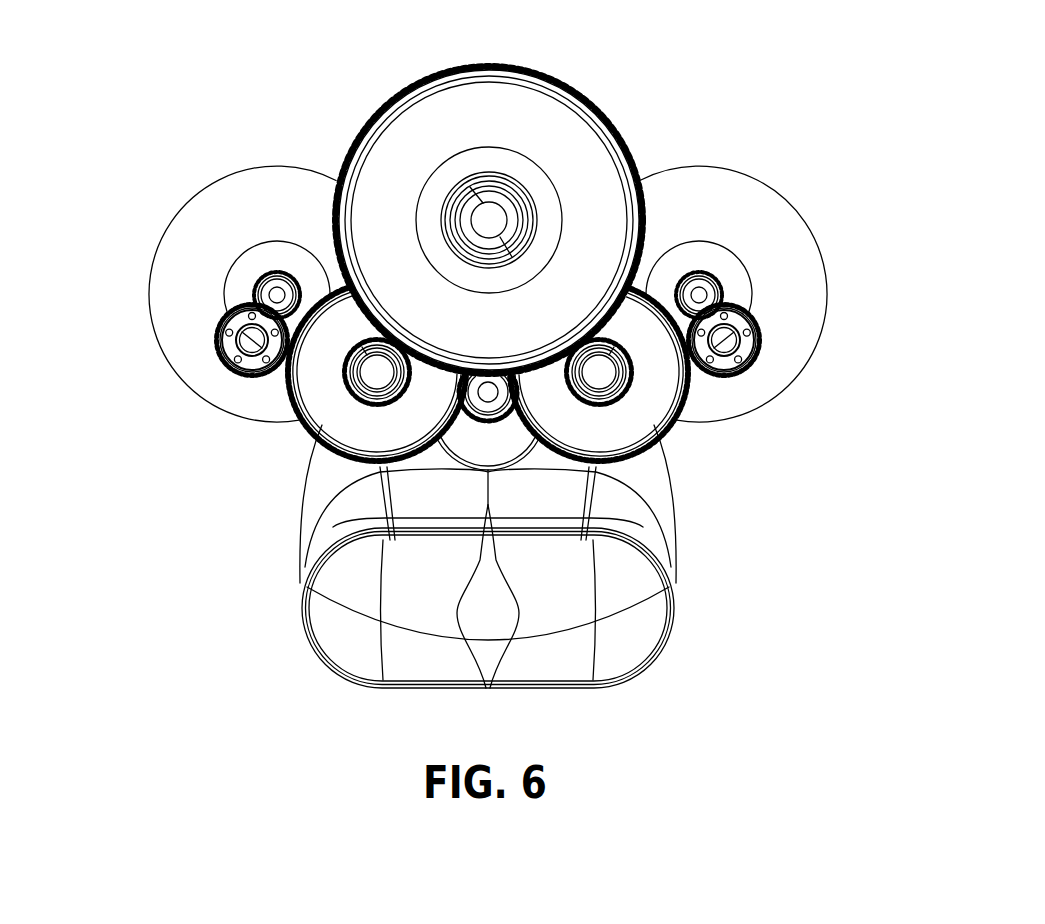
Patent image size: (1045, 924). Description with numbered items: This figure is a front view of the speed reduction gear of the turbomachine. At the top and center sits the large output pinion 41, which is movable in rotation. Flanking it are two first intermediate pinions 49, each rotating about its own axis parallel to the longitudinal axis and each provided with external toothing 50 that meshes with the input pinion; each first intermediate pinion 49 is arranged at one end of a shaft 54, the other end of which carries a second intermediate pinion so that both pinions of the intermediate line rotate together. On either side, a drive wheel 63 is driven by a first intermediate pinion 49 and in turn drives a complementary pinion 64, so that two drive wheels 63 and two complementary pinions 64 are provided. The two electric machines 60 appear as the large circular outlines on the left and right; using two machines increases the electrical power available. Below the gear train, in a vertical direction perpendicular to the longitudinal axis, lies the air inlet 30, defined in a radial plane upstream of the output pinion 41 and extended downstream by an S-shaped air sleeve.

The output pinion 41 is at (623, 132).
The electric machine 60 is at (197, 180).
The complementary pinion 64 is at (280, 270).
The drive wheel 63 is at (216, 356).
The first intermediate pinion 49 is at (298, 432).
The external toothing 50 is at (365, 403).
The shaft 54 is at (688, 424).
The air inlet 30 is at (343, 597).